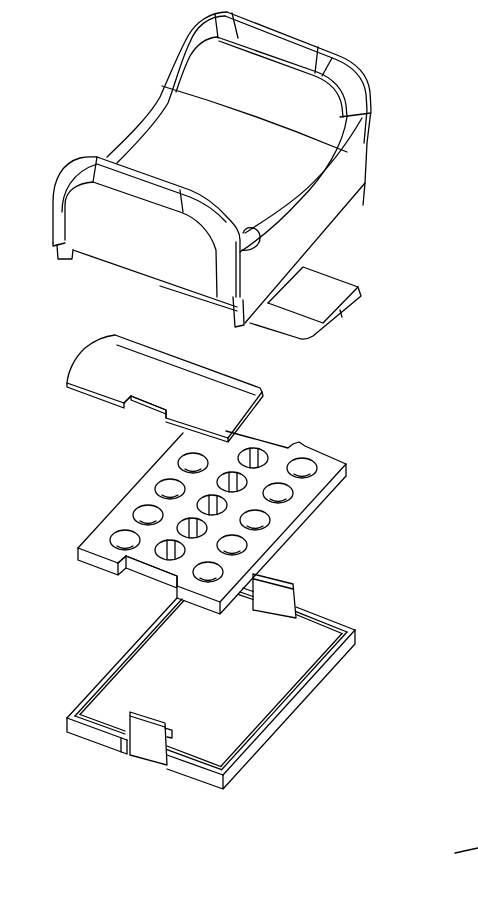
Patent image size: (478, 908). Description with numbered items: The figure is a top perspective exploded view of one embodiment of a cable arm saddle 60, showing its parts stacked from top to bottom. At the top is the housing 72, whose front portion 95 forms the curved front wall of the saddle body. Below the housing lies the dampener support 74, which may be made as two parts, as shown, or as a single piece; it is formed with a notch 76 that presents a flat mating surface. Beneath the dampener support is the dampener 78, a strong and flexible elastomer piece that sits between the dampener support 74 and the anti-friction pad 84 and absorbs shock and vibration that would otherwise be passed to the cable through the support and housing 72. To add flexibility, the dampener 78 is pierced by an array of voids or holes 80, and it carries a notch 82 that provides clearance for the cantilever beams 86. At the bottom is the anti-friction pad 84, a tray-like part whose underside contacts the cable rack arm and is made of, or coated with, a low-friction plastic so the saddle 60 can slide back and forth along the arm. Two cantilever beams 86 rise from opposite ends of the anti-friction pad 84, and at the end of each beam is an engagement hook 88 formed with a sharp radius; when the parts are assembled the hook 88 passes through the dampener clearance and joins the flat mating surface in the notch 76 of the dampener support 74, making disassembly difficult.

The saddle 60 is at (429, 67).
The housing 72 is at (366, 182).
The dampener support 74 is at (352, 307).
The notch 76 is at (143, 412).
The dampener 78 is at (347, 476).
The holes 80 is at (306, 460).
The notch 82 is at (144, 587).
The anti-friction pad 84 is at (272, 742).
The cantilever beams 86 is at (294, 583).
The engagement hook 88 is at (166, 733).
The front portion 95 is at (153, 247).